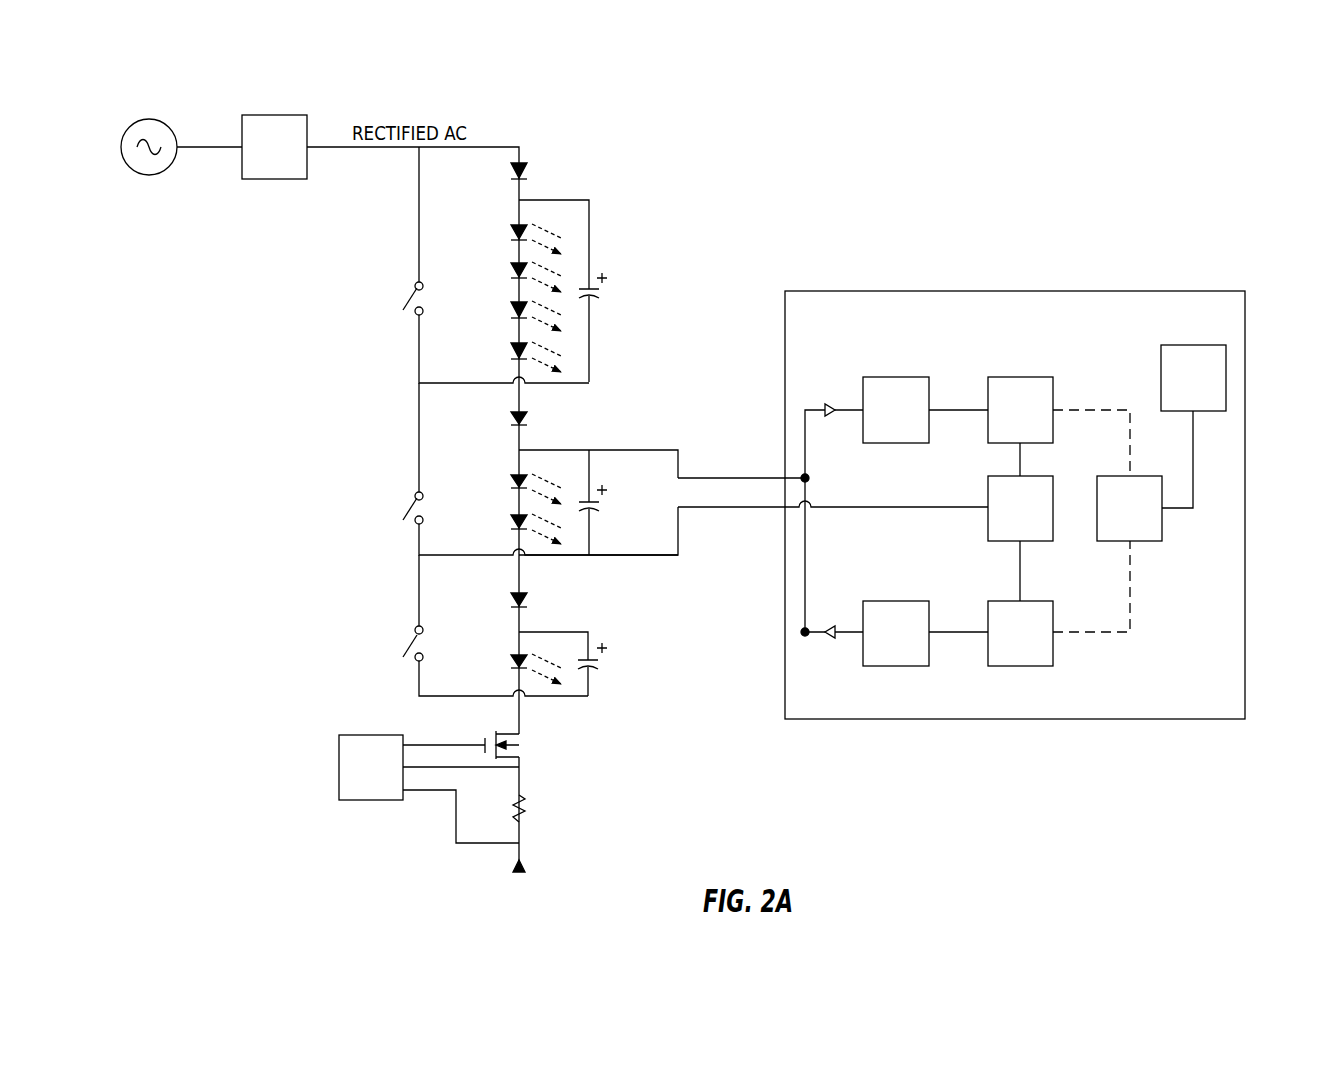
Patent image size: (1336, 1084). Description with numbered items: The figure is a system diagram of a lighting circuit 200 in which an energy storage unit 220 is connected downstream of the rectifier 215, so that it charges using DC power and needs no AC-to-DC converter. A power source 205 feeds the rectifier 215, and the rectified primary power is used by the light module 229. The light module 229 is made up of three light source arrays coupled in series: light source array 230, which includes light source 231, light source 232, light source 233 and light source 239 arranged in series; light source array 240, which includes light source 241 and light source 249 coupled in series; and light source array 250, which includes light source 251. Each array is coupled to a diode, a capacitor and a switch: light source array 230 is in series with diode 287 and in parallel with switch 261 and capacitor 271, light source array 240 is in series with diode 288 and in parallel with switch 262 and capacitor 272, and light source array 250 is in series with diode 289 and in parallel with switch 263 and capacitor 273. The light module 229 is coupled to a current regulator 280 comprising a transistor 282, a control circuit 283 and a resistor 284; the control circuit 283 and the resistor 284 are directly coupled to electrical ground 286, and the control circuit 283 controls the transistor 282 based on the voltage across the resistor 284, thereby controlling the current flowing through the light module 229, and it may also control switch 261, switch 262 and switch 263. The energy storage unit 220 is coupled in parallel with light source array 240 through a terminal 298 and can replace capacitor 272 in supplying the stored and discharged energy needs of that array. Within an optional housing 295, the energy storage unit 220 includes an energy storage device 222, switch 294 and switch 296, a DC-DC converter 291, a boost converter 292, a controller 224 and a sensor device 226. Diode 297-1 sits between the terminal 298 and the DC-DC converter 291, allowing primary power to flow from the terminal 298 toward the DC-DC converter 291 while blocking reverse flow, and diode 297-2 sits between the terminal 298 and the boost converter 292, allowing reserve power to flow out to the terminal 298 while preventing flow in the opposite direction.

The lighting circuit 200 is at (1127, 147).
The power source 205 is at (149, 119).
The rectifier 215 is at (274, 147).
The energy storage unit 220 is at (1168, 258).
The energy storage device 222 is at (1020, 538).
The controller 224 is at (1145, 476).
The sensor device 226 is at (1193, 378).
The light module 229 is at (628, 145).
The light source array 230 is at (560, 287).
The light source 231 is at (515, 230).
The light source 232 is at (515, 268).
The light source 233 is at (515, 307).
The light source 239 is at (515, 348).
The light source array 240 is at (568, 485).
The light source 241 is at (515, 480).
The light source 249 is at (515, 522).
The light source array 250 is at (556, 652).
The light source 251 is at (515, 662).
The switch 261 is at (412, 299).
The switch 262 is at (412, 508).
The switch 263 is at (412, 645).
The capacitor 271 is at (594, 298).
The capacitor 272 is at (596, 511).
The capacitor 273 is at (596, 669).
The current regulator 280 is at (436, 781).
The transistor 282 is at (522, 752).
The control circuit 283 is at (429, 789).
The resistor 284 is at (526, 808).
The electrical ground 286 is at (525, 870).
The diode 287 is at (527, 167).
The diode 288 is at (510, 418).
The diode 289 is at (510, 600).
The DC-DC converter 291 is at (925, 410).
The boost converter 292 is at (925, 633).
The switch 294 is at (1059, 426).
The housing 295 is at (1013, 464).
The switch 296 is at (1059, 603).
The diode 297-1 is at (828, 405).
The diode 297-2 is at (828, 627).
The terminal 298 is at (752, 477).